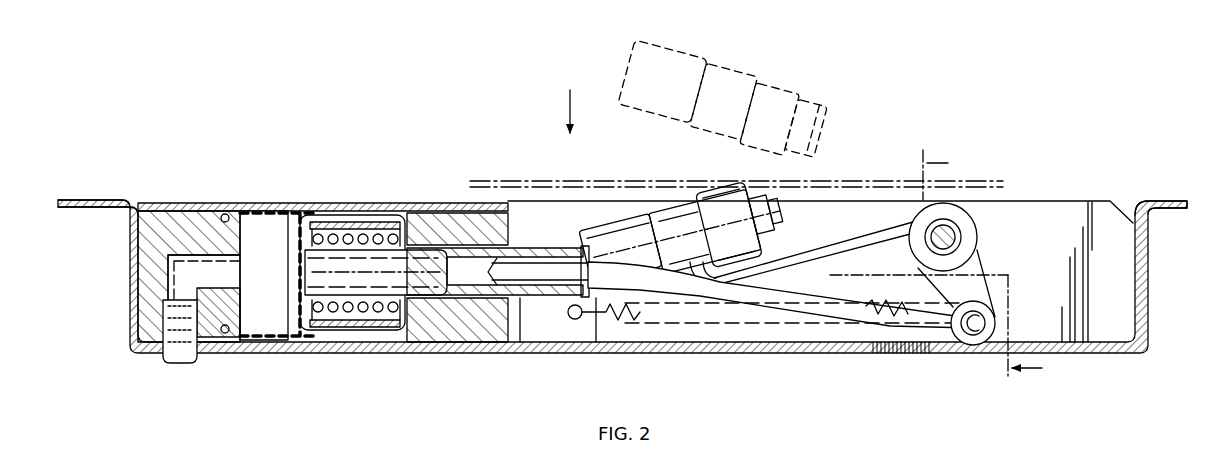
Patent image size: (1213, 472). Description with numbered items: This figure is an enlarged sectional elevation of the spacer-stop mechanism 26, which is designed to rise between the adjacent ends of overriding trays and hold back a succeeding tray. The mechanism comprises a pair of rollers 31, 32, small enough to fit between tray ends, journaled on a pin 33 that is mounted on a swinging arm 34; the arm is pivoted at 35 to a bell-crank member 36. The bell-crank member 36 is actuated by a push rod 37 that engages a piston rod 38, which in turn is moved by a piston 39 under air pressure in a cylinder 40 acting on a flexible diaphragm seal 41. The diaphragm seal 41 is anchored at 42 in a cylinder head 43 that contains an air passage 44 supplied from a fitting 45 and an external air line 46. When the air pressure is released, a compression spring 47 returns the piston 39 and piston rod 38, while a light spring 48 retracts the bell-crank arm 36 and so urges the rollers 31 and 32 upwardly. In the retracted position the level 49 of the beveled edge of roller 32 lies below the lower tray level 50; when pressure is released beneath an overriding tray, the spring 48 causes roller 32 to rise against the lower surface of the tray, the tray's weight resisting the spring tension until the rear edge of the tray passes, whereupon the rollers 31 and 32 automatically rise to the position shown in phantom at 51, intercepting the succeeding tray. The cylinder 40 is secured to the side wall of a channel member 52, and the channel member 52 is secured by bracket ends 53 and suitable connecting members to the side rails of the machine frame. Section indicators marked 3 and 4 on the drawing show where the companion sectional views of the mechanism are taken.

The section line 3- 3 is at (991, 265).
The direction arrow 4 is at (568, 99).
The spacer-stop mechanism 26 is at (640, 175).
The roller 31 is at (594, 236).
The roller 32 is at (730, 200).
The pin 33 is at (792, 222).
The swinging arm 34 is at (860, 242).
The pivot 35 is at (956, 240).
The bell-crank member 36 is at (984, 292).
The push rod 37 is at (813, 304).
The piston rod 38 is at (540, 242).
The piston 39 is at (366, 224).
The cylinder 40 is at (266, 220).
The flexible diaphragm seal 41 is at (300, 216).
The anchor 42 is at (226, 214).
The cylinder head 43 is at (190, 215).
The air passage 44 is at (220, 283).
The fitting 45 is at (200, 322).
The external air line 46 is at (172, 363).
The compression spring 47 is at (360, 308).
The light spring 48 is at (640, 322).
The level of the beveled edge of roller 49 is at (872, 186).
The lower tray level 50 is at (834, 180).
The phantom position 51 is at (790, 92).
The channel member 52 is at (471, 353).
The bracket ends 53 is at (100, 200).